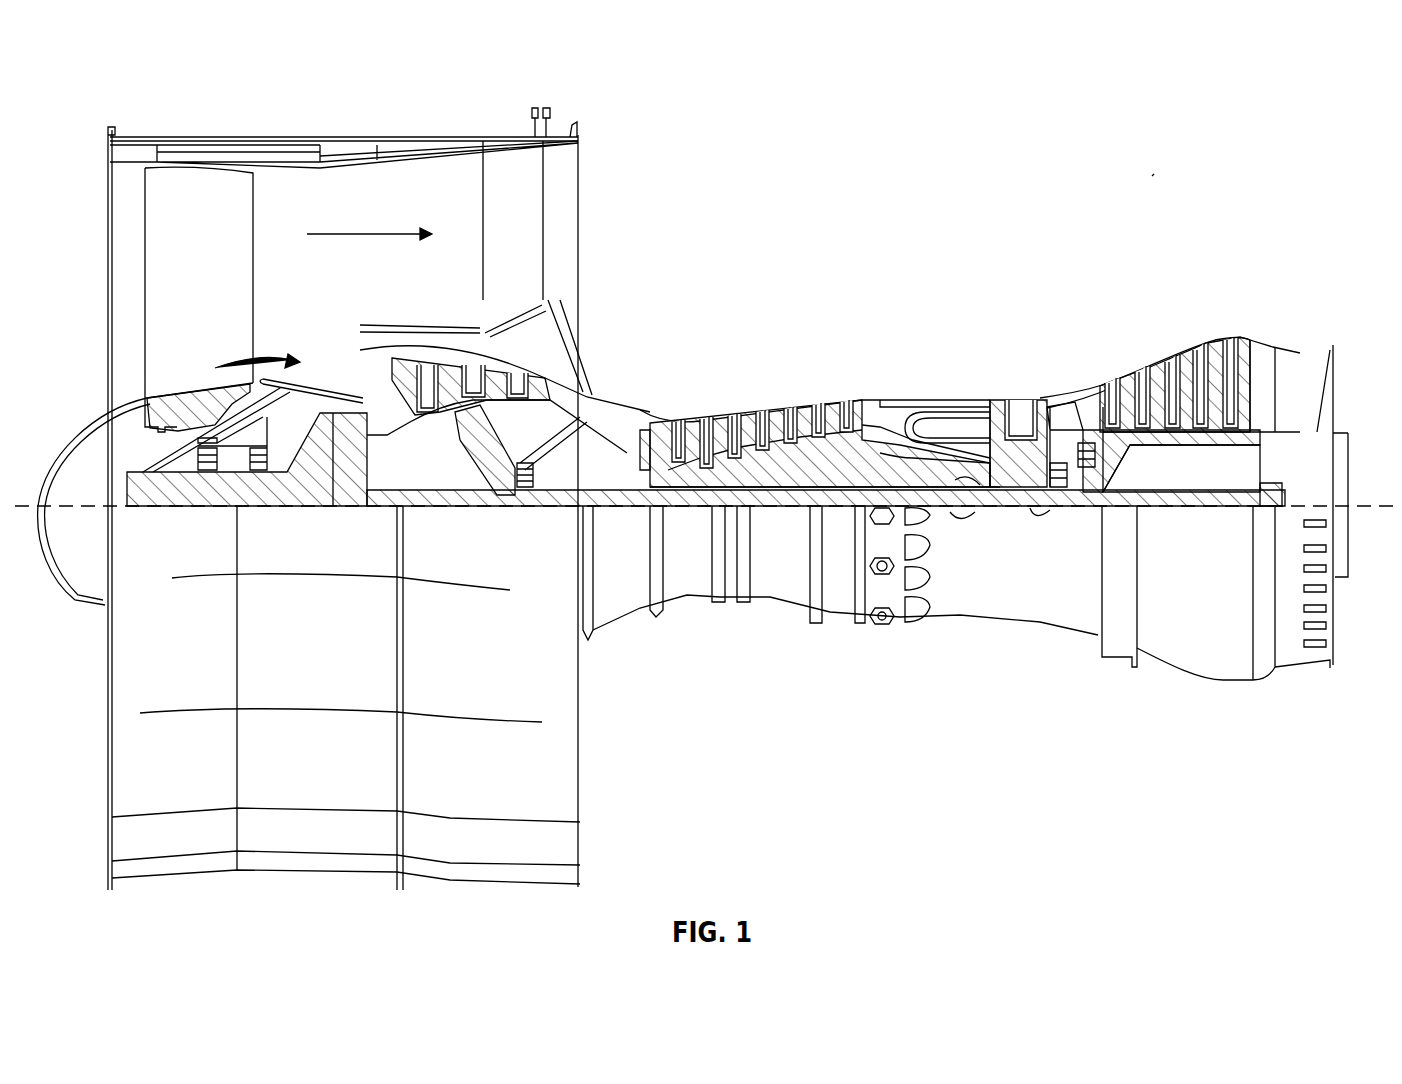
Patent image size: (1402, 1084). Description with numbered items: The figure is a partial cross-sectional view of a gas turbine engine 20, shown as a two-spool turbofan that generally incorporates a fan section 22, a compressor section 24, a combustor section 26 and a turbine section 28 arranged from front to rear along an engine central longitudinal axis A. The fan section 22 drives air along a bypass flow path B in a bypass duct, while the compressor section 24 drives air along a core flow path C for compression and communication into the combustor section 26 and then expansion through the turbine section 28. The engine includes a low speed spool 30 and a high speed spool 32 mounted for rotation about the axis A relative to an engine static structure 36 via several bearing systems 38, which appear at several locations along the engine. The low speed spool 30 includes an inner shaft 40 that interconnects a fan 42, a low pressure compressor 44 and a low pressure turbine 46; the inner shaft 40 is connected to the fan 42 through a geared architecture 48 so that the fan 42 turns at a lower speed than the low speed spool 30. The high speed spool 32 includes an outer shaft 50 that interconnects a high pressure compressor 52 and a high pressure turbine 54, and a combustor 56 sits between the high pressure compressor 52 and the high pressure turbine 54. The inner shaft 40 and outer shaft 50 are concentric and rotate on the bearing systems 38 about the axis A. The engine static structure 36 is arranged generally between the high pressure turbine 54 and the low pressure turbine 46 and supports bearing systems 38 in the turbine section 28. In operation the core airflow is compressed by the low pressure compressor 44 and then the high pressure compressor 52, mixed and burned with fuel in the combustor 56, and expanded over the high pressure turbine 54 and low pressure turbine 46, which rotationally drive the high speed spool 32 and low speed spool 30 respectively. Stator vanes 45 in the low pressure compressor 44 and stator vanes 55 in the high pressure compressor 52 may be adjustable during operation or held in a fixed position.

The gas turbine engine 20 is at (1160, 164).
The fan section 22 is at (372, 116).
The compressor section 24 is at (778, 348).
The combustor section 26 is at (930, 348).
The turbine section 28 is at (1092, 330).
The low speed spool 30 is at (793, 520).
The high speed spool 32 is at (850, 458).
The engine static structure 36 is at (833, 637).
The bearing systems 38 is at (210, 470).
The inner shaft 40 is at (592, 505).
The fan 42 is at (225, 268).
The low pressure compressor 44 is at (497, 375).
The stator vanes 45 is at (452, 375).
The low pressure turbine 46 is at (1188, 370).
The geared architecture 48 is at (347, 458).
The outer shaft 50 is at (968, 487).
The high pressure compressor 52 is at (763, 475).
The high pressure turbine 54 is at (1023, 395).
The stator vanes 55 is at (665, 428).
The combustor 56 is at (945, 420).
The engine central longitudinal axis A is at (1356, 498).
The bypass flow path B is at (370, 232).
The core flow path C is at (232, 362).